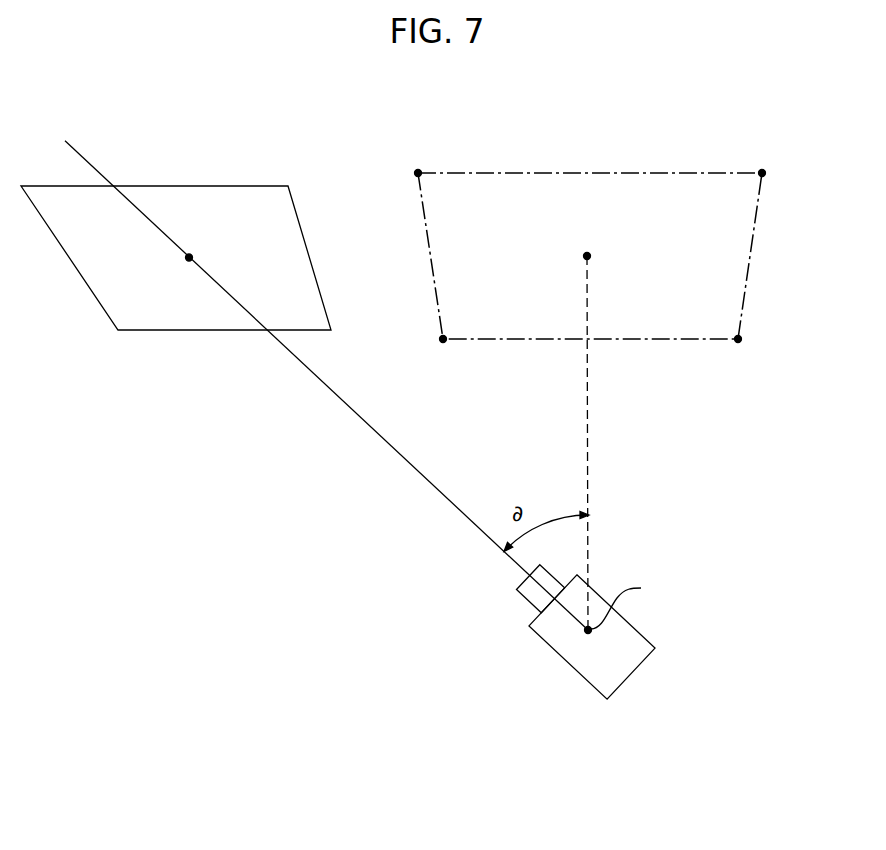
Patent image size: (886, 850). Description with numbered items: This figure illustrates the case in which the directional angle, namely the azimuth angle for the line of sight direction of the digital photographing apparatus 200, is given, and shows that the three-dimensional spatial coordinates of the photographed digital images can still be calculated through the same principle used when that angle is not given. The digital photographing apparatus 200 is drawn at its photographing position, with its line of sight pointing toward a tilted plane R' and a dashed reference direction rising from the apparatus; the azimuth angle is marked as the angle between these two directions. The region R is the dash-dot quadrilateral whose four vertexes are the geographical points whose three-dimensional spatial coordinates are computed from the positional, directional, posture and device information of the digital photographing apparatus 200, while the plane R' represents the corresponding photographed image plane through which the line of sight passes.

The digital photographing apparatus 200 is at (572, 668).
The reference region R is at (583, 238).
The projected region R' is at (176, 224).